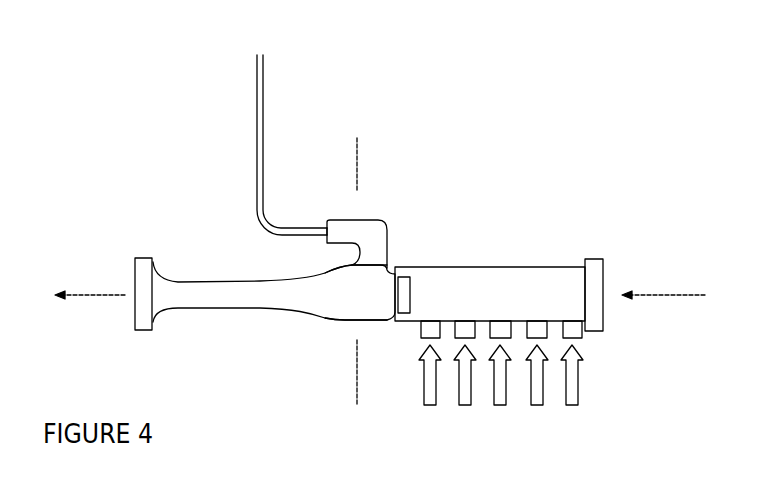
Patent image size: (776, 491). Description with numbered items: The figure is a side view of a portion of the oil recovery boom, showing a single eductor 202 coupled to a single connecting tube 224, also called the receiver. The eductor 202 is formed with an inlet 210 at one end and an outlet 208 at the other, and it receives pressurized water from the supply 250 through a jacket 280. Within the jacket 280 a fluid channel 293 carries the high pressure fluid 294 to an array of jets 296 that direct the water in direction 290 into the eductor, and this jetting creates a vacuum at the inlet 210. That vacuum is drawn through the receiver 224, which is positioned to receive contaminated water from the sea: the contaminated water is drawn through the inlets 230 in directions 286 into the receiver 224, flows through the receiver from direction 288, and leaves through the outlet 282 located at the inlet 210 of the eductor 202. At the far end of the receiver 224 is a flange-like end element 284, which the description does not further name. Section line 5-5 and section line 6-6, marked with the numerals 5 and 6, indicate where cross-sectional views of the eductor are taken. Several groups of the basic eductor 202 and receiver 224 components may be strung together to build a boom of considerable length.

The section line 5- 5 is at (357, 138).
The section line 6- 6 is at (357, 138).
The eductor 202 is at (280, 315).
The outlet 208 is at (145, 292).
The inlet 210 is at (388, 292).
The connecting tube 224 is at (505, 285).
The inlets 230 is at (572, 333).
The supply 250 is at (264, 100).
The jacket 280 is at (381, 224).
The outlet 282 is at (413, 267).
The distal flange 284 is at (600, 280).
The directions 286 is at (462, 405).
The direction 288 is at (705, 295).
The direction 290 is at (93, 295).
The fluid channel 293 is at (610, 490).
The high pressure fluid 294 is at (515, 487).
The jets 296 is at (775, 432).